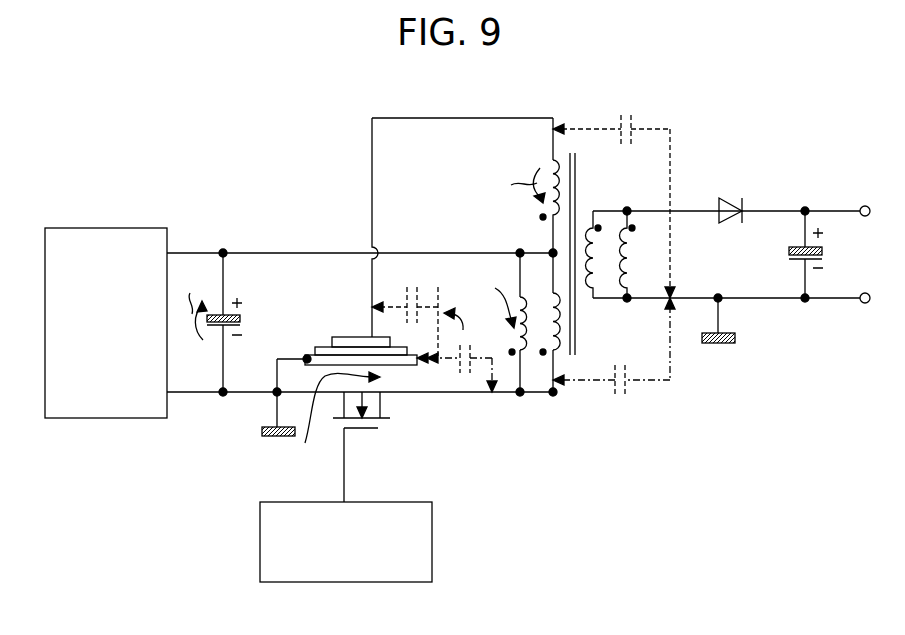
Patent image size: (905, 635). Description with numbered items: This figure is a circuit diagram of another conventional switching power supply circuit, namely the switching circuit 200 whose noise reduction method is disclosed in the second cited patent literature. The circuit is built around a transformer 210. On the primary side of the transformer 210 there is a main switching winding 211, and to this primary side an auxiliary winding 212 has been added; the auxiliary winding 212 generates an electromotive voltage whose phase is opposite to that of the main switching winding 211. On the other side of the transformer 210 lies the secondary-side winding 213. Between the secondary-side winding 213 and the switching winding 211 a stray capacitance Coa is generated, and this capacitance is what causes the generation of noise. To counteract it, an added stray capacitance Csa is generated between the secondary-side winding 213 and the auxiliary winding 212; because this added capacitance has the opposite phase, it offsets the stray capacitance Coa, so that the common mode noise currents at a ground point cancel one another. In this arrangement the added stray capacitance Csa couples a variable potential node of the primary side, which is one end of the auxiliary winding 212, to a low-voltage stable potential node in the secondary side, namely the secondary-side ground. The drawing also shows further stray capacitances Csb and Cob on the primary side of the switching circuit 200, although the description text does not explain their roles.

The switching circuit 200 is at (778, 78).
The transformer 210 is at (583, 108).
The main switching winding 211 is at (560, 349).
The auxiliary winding 212 is at (558, 165).
The secondary-side winding 213 is at (590, 268).
The added stray capacitance Csa is at (634, 118).
The stray capacitance Csb is at (405, 291).
The stray capacitance Coa is at (630, 394).
The stray capacitance Cob is at (458, 368).